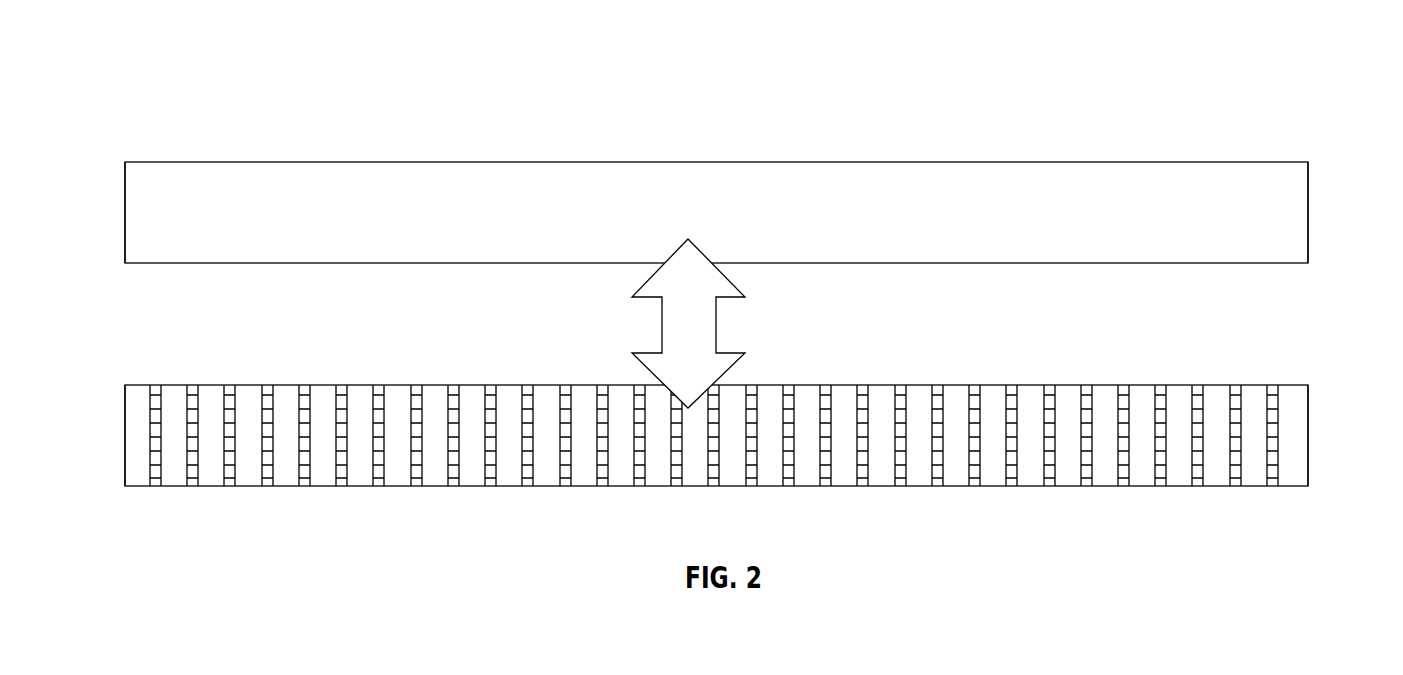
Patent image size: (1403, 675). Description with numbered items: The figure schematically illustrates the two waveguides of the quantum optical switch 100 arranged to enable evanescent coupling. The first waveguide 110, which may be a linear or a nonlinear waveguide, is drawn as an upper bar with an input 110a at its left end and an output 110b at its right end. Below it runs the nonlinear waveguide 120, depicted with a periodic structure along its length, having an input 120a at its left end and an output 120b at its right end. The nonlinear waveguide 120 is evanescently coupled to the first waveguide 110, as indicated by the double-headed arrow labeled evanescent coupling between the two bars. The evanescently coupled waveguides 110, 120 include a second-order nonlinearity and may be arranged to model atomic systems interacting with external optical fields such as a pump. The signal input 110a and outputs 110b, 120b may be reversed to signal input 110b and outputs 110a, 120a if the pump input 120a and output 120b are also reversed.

The quantum optical switch 100 is at (187, 86).
The first waveguide 110 is at (1080, 162).
The input of first waveguide 110a is at (125, 212).
The output of first waveguide 110b is at (1308, 212).
The nonlinear waveguide 120 is at (1103, 477).
The input of nonlinear waveguide 120a is at (155, 446).
The output of nonlinear waveguide 120b is at (1308, 438).